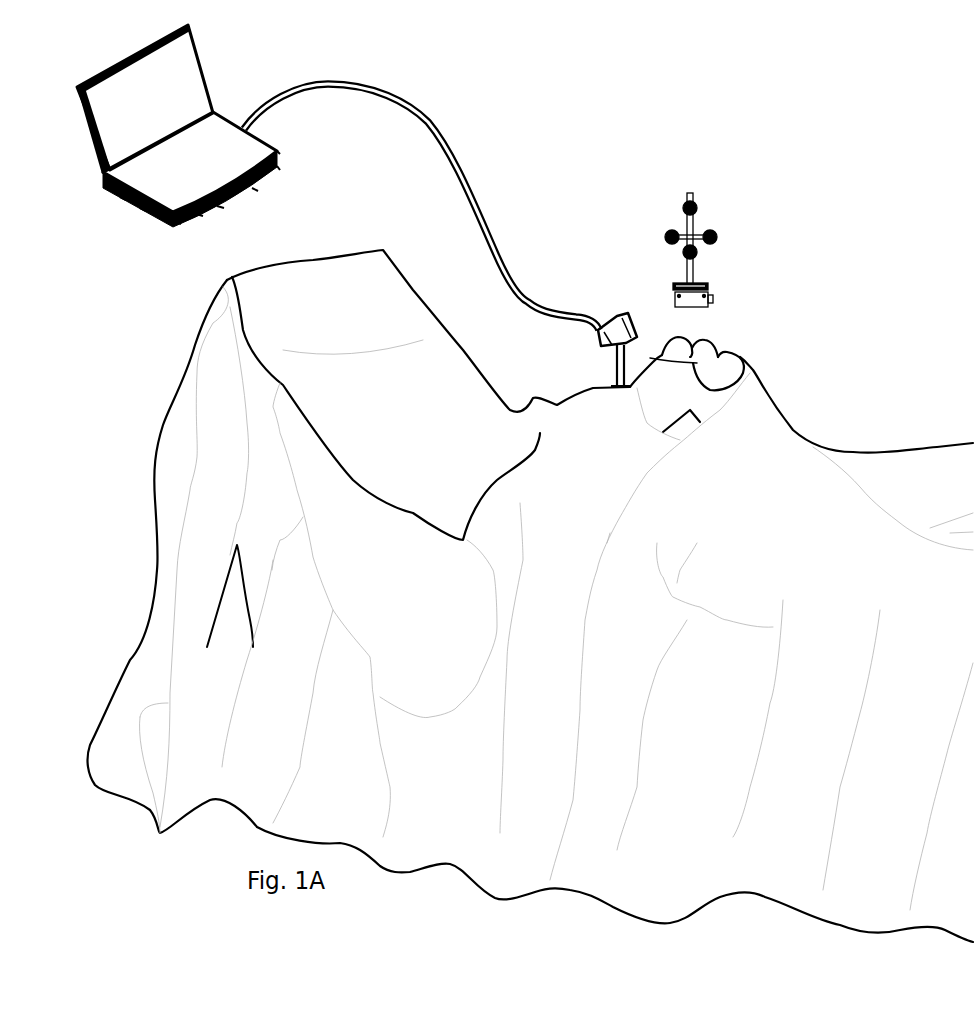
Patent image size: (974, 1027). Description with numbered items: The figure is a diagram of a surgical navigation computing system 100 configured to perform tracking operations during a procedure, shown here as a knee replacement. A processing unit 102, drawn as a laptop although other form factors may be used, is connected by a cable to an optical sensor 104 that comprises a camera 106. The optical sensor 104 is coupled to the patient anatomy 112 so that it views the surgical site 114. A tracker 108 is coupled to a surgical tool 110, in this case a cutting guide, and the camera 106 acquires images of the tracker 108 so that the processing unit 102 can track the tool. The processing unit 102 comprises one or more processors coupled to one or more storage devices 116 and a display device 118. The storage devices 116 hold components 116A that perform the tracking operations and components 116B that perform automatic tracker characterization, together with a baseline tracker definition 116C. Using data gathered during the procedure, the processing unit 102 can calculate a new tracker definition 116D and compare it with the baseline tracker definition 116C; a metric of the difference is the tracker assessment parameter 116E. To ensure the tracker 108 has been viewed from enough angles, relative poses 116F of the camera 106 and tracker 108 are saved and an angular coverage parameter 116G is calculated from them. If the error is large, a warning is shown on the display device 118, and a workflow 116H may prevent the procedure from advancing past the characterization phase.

The computing system 100 is at (595, 85).
The processing unit 102 is at (198, 145).
The optical sensor 104 is at (613, 315).
The camera 106 is at (633, 319).
The tracker 108 is at (713, 228).
The surgical tool 110 is at (713, 285).
The patient anatomy 112 is at (632, 414).
The surgical site 114 is at (675, 347).
The storage devices 116 is at (102, 187).
The components to perform tracking operations 116A is at (122, 198).
The components to perform automatic tracker characterization operations 116B is at (142, 210).
The baseline tracker definition 116C is at (183, 228).
The new tracker definition 116D is at (200, 217).
The tracker assessment parameter 116E is at (220, 208).
The relative poses 116F is at (255, 190).
The angular coverage parameter 116G is at (280, 170).
The workflow 116H is at (279, 152).
The display device 118 is at (163, 109).